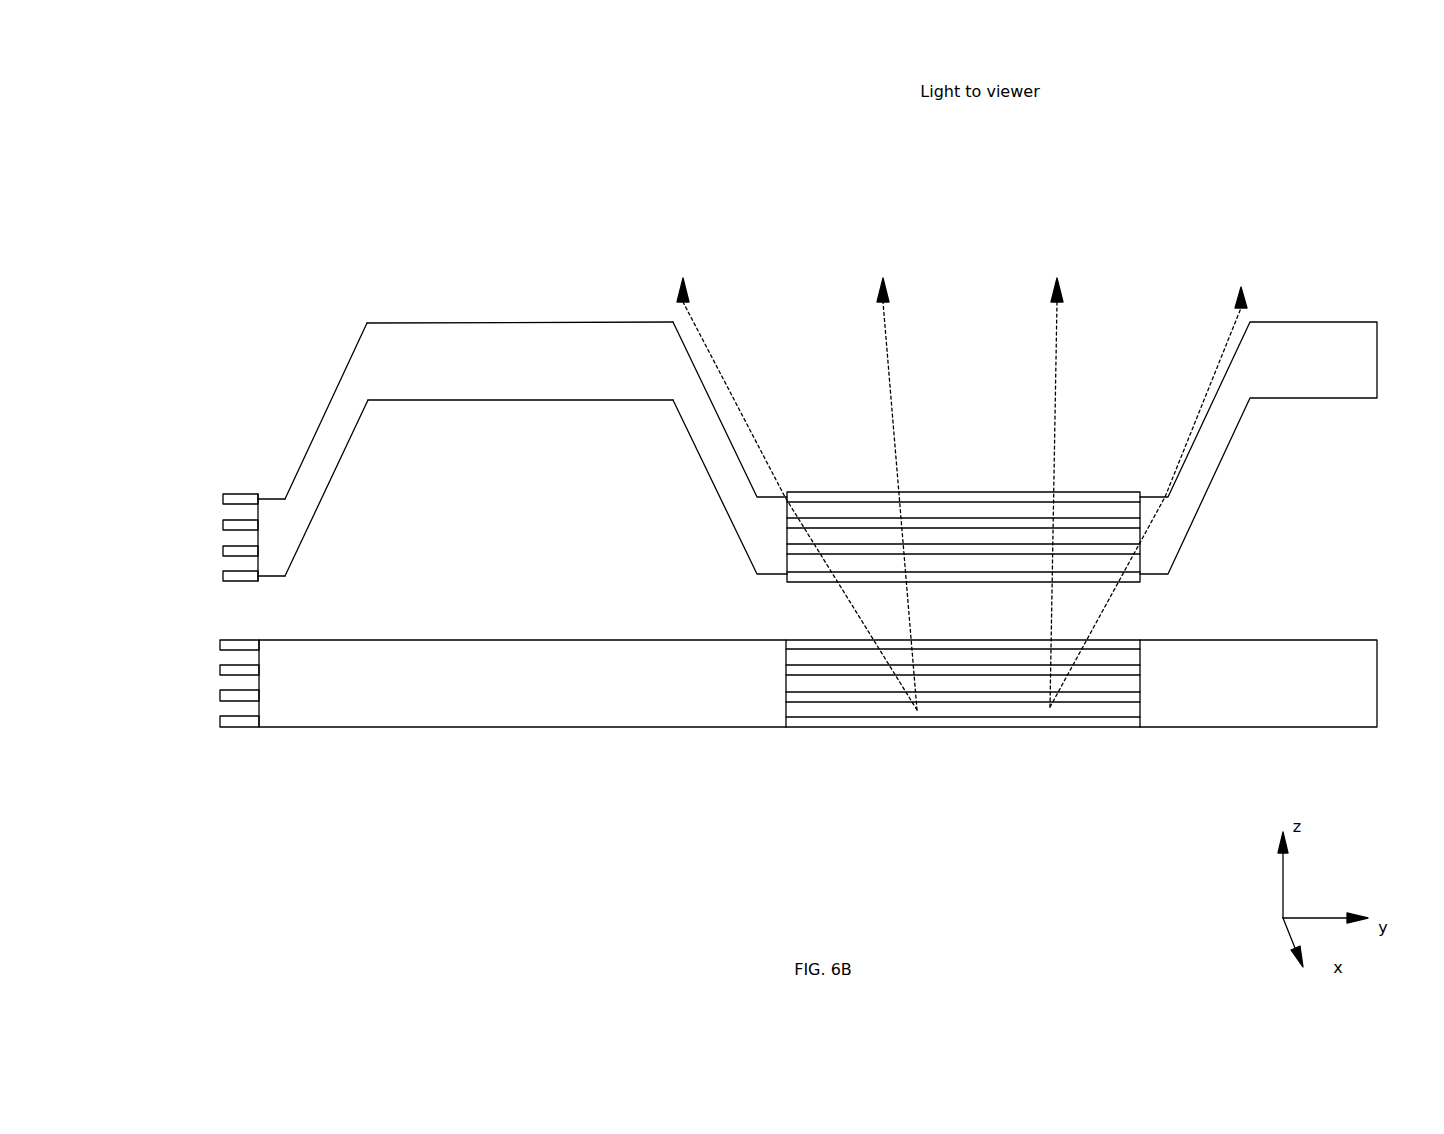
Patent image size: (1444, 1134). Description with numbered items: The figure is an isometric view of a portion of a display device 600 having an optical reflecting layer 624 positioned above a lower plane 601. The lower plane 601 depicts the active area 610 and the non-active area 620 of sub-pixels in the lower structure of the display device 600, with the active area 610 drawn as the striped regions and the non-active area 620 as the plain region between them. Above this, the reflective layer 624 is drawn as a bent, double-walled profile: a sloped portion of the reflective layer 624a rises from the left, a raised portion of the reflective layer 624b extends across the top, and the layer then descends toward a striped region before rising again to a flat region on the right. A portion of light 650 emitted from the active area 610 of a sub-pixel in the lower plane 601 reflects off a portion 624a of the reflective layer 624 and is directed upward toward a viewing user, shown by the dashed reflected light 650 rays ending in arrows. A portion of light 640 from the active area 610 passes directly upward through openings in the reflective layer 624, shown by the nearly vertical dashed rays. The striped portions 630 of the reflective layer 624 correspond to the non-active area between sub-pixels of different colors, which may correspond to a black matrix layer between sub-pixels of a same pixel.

The display device 600 is at (176, 103).
The lower plane 601 is at (1283, 675).
The active area 610 is at (843, 712).
The non-active area 620 is at (785, 698).
The reflective layer 624 is at (1292, 362).
The portion of reflective layer 624a is at (329, 447).
The portion of reflective layer 624b is at (453, 346).
The portions corresponding to non-active area 630 is at (1127, 552).
The portion of light 640 is at (970, 442).
The reflected light 650 is at (960, 449).